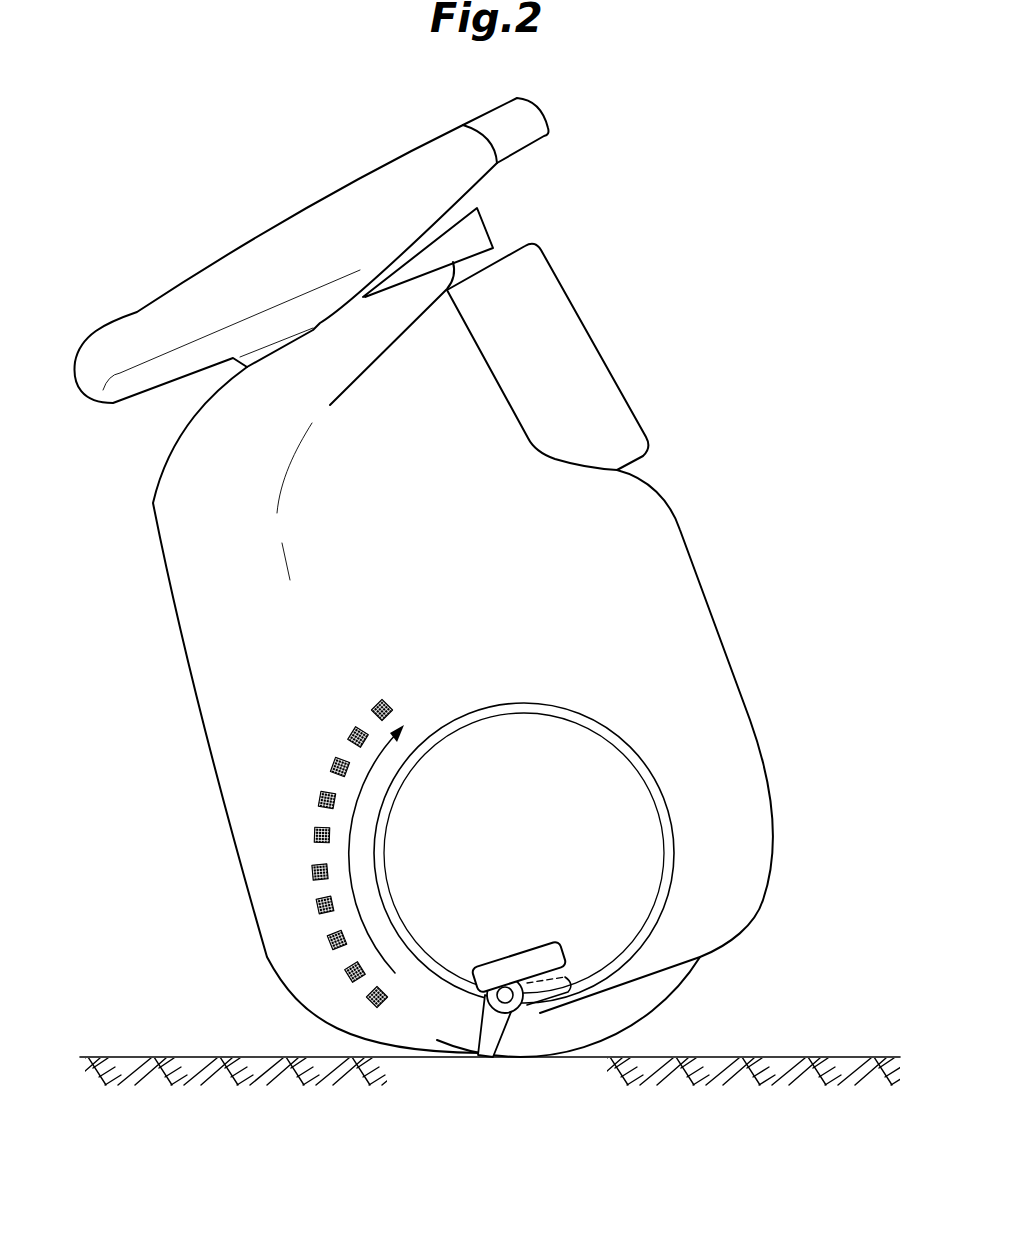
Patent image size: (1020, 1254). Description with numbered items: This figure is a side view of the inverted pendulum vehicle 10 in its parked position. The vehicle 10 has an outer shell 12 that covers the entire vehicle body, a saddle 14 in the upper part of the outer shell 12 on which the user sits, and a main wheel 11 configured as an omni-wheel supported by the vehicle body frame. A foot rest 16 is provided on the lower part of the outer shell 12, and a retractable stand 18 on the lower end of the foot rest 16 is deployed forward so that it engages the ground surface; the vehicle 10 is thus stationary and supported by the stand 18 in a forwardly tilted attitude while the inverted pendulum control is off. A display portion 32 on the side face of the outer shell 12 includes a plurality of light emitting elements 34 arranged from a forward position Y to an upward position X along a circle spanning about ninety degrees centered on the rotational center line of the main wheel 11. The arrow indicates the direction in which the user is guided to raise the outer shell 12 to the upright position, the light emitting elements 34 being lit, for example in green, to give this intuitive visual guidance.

The inverted pendulum vehicle 10 is at (701, 469).
The main wheel 11 is at (642, 1002).
The outer shell 12 is at (662, 548).
The saddle 14 is at (313, 236).
The foot rest 16 is at (538, 957).
The retractable stand 18 is at (487, 1060).
The display portion 32 is at (303, 846).
The light emitting elements 34 is at (320, 797).